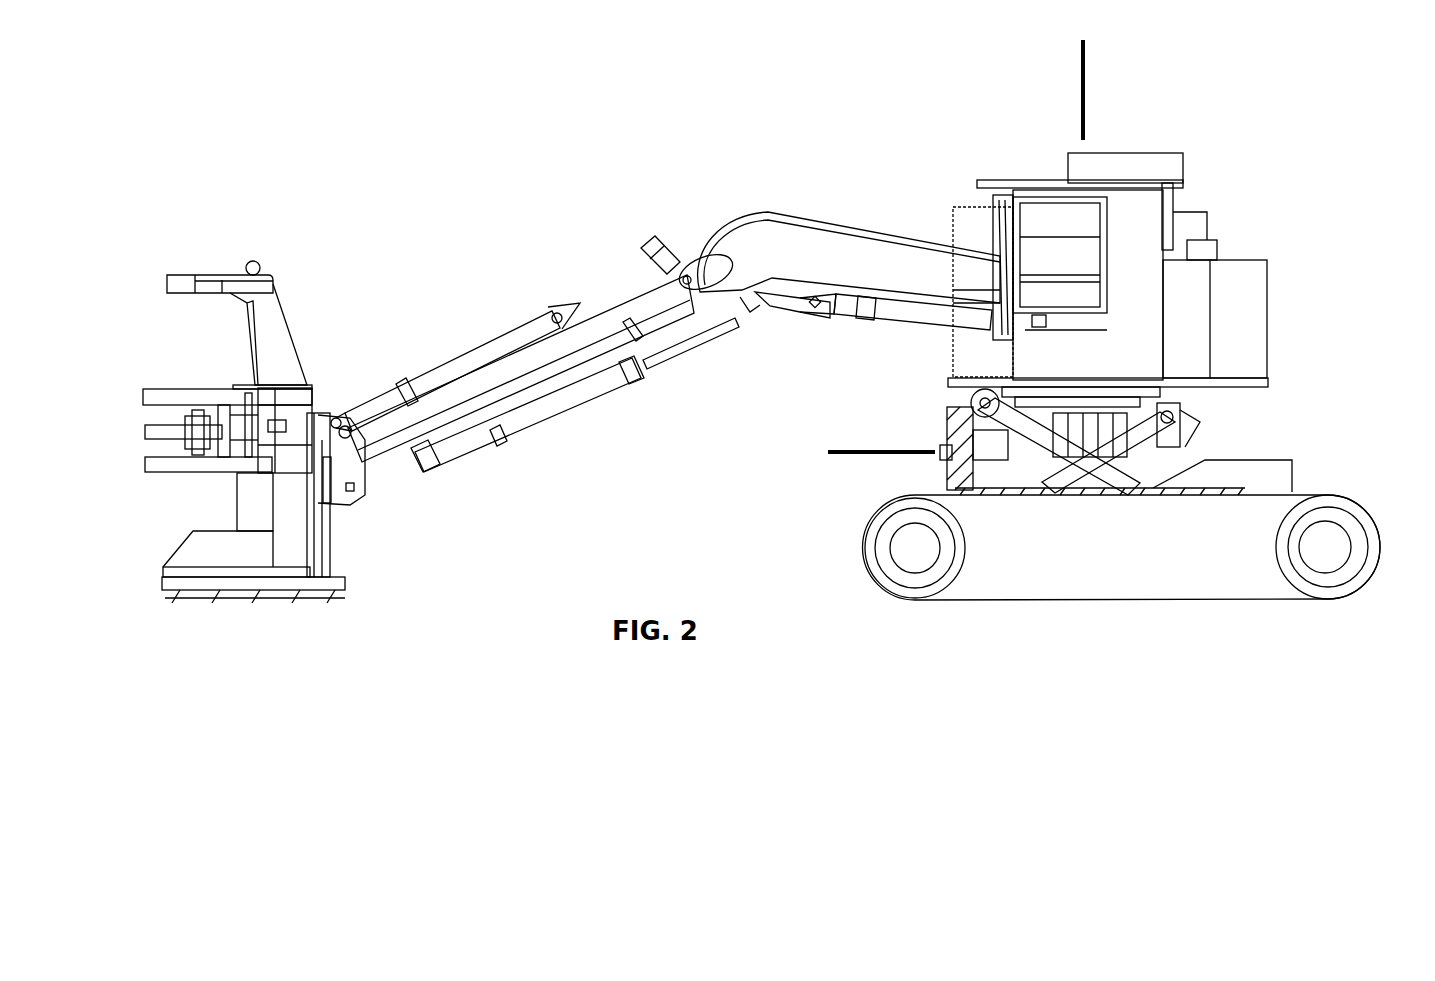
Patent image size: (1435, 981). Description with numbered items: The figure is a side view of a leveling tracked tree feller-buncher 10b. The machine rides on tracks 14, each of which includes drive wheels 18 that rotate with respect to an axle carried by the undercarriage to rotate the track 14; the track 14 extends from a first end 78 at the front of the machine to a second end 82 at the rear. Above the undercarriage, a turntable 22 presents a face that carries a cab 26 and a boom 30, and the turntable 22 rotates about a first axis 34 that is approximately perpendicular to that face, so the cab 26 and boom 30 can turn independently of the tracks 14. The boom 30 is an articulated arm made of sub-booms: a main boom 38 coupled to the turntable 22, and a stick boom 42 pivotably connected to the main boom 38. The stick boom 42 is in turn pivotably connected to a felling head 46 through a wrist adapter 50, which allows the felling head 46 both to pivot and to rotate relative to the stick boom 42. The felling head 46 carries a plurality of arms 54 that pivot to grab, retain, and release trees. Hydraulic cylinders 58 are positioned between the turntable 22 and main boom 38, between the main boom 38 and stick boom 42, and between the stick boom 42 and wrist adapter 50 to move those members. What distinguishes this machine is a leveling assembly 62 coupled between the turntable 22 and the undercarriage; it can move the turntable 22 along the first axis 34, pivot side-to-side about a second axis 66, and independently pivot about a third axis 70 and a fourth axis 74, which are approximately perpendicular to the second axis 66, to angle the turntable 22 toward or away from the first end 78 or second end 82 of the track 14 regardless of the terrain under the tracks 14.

The leveling tree feller-buncher 10b is at (518, 231).
The tracks 14 is at (1318, 492).
The drive wheels 18 is at (903, 568).
The turntable 22 is at (1272, 380).
The cab 26 is at (1008, 196).
The boom 30 is at (652, 210).
The first axis 34 is at (1087, 86).
The main boom 38 is at (822, 246).
The stick boom 42 is at (466, 415).
The felling head 46 is at (284, 307).
The wrist adapter 50 is at (353, 503).
The arms 54 is at (173, 388).
The hydraulic cylinders 58 is at (452, 358).
The leveling assembly 62 is at (1200, 434).
The second axis 66 is at (838, 454).
The third axis 70 is at (971, 403).
The fourth axis 74 is at (1190, 417).
The first end of the track 78 is at (865, 552).
The second end of the track 82 is at (1367, 516).